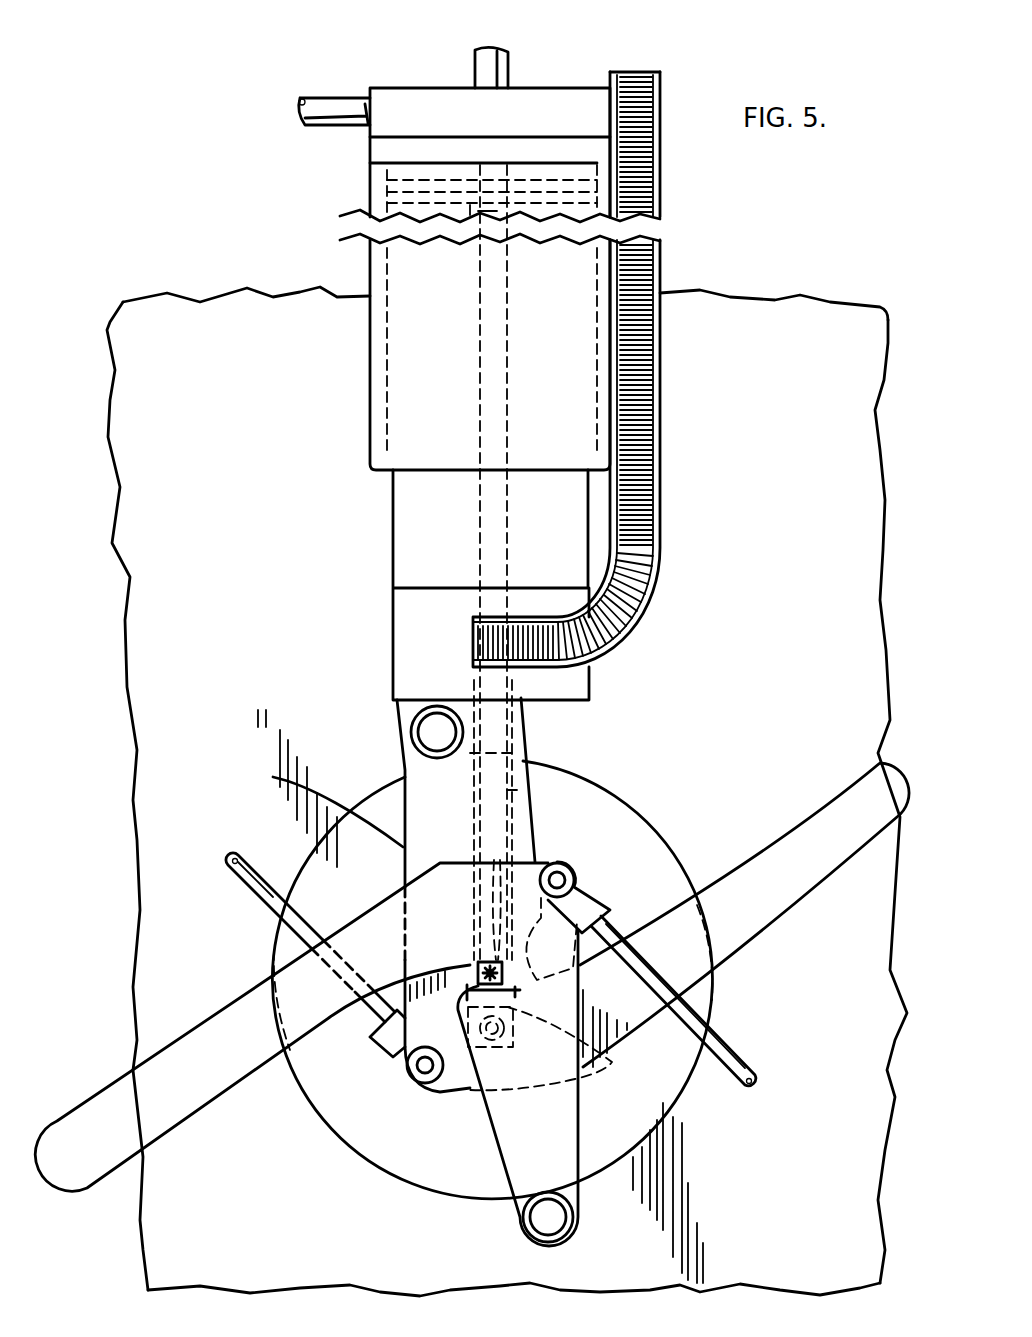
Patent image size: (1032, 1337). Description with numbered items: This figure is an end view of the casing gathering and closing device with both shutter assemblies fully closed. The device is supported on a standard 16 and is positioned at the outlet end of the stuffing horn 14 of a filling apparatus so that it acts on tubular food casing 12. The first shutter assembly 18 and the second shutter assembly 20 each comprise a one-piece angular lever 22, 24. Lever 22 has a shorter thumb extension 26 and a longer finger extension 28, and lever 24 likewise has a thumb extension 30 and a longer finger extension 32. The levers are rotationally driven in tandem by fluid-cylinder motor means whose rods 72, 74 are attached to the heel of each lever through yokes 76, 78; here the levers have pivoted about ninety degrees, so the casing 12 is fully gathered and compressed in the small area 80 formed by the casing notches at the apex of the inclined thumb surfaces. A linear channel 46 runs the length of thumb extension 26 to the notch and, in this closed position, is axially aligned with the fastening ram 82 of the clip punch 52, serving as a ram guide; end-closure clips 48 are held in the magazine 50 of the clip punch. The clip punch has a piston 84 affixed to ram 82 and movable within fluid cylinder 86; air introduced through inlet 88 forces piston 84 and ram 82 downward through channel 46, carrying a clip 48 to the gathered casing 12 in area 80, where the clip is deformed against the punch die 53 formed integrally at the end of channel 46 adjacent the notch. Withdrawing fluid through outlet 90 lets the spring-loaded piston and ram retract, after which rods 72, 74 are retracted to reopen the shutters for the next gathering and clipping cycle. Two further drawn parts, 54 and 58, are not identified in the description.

The tubular food casing 12 is at (490, 973).
The stuffing horn 14 is at (327, 1133).
The standard 16 is at (155, 647).
The first shutter assembly 18 is at (755, 958).
The second shutter assembly 20 is at (207, 1022).
The angular lever 22 is at (812, 851).
The angular lever 24 is at (180, 1080).
The thumb extension 26 is at (273, 777).
The finger extension 28 is at (873, 780).
The thumb extension 30 is at (562, 1120).
The finger extension 32 is at (83, 1173).
The linear channel 46 is at (530, 789).
The casing clip 48 is at (640, 530).
The magazine 50 is at (660, 252).
The clip punch 52 is at (353, 363).
The punch die 53 is at (585, 1055).
The pivot pin 54 is at (425, 722).
The pivot pin 58 is at (552, 1223).
The rod 72 is at (247, 893).
The rod 74 is at (743, 1057).
The yoke 76 is at (393, 1057).
The yoke 78 is at (590, 890).
The area 80 is at (478, 963).
The fastening ram 82 is at (517, 218).
The piston 84 is at (441, 180).
The fluid cylinder 86 is at (380, 251).
The inlet 88 is at (313, 98).
The outlet 90 is at (487, 58).